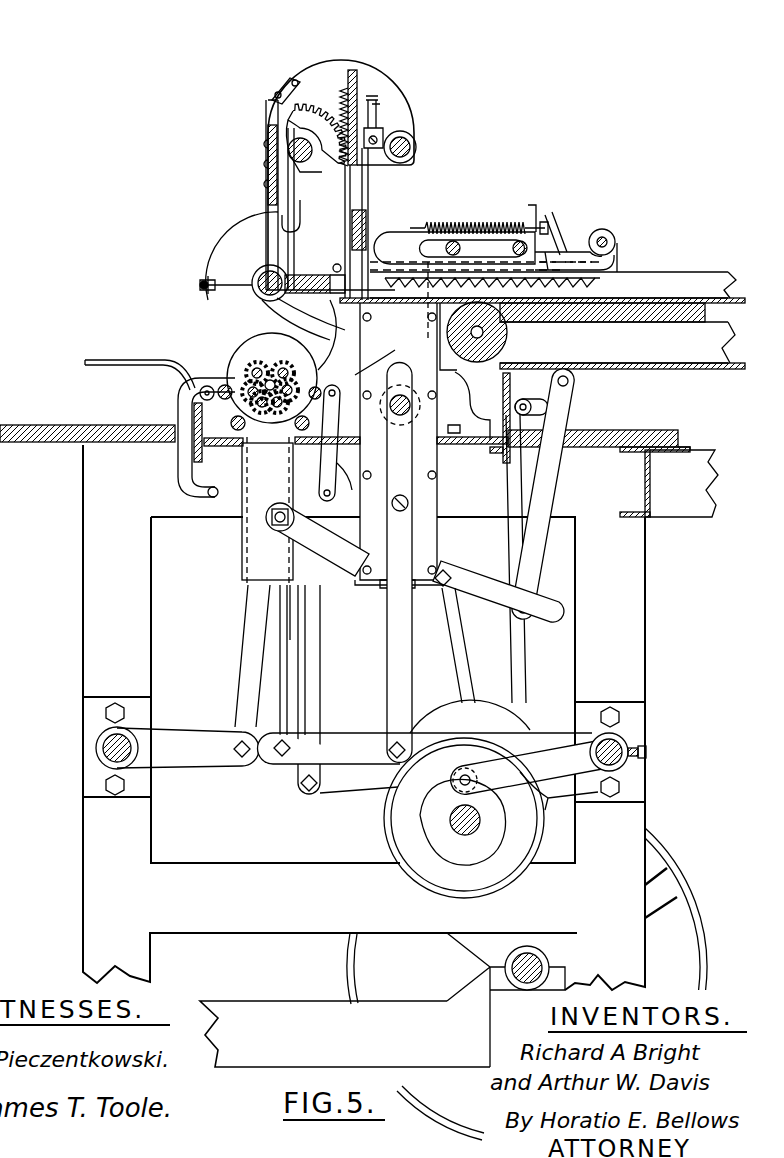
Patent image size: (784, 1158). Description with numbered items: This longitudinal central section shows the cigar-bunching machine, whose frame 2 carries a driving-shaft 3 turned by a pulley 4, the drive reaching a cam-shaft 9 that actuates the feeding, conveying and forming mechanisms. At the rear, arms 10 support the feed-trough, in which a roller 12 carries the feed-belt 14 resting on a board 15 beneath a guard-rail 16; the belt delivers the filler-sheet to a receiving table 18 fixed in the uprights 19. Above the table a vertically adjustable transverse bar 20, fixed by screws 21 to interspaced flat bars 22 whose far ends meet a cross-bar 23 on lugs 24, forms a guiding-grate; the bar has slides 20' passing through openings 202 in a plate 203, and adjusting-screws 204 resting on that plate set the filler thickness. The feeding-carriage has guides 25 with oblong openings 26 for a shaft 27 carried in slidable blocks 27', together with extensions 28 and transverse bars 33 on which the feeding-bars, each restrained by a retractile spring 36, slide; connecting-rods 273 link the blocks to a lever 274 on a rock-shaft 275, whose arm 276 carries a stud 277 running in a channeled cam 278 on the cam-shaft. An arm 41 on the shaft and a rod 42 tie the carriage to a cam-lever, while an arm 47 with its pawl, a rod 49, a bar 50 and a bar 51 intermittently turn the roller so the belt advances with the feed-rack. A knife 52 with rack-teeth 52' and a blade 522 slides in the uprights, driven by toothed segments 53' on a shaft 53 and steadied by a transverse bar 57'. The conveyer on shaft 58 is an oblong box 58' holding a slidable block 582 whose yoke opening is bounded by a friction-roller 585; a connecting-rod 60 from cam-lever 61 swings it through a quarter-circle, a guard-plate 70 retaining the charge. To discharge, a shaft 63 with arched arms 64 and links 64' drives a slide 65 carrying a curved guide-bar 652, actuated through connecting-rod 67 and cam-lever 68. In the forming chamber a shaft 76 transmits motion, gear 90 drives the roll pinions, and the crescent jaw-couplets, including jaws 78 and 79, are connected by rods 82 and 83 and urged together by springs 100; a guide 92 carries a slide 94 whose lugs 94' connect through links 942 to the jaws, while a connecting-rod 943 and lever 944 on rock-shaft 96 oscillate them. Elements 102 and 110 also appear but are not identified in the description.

The frame 2 is at (95, 562).
The driving-shaft 3 is at (542, 962).
The pulley 4 is at (352, 968).
The cam-shaft 9 is at (450, 825).
The arms 10 is at (682, 506).
The roller 12 is at (492, 330).
The feed-belt 14 is at (672, 368).
The board 15 is at (675, 313).
The guard-rail 16 is at (697, 290).
The receiving plate or table 18 is at (395, 300).
The uprights 19 is at (282, 243).
The transverse bar 20 is at (472, 231).
The vertical slides or strips 20' is at (412, 224).
The openings 202 is at (385, 108).
The plate 203 is at (385, 132).
The adjusting-screws 204 is at (380, 98).
The screws 21 is at (455, 247).
The flat bars 22 is at (563, 255).
The cross-bar 23 is at (615, 240).
The lugs 24 is at (612, 262).
The guides 25 is at (422, 540).
The oblong openings 26 is at (404, 477).
The shaft 27 is at (401, 563).
The vertically-slidable blocks 27' is at (409, 381).
The connecting-rod 273 is at (396, 660).
The lever 274 is at (512, 745).
The rock-shaft 275 is at (625, 762).
The arm 276 is at (548, 797).
The stud 277 is at (420, 767).
The channeled cam 278 is at (445, 848).
The extensions or guides 28 is at (458, 210).
The transverse bars 33 is at (500, 215).
The retractile spring 36 is at (492, 222).
The arm 41 is at (490, 408).
The rod 42 is at (520, 655).
The arm 47 is at (572, 383).
The rod 49 is at (548, 490).
The bar 50 is at (455, 582).
The bar 51 is at (457, 645).
The knife 52 is at (378, 89).
The rack-teeth 52' is at (327, 93).
The blade 522 is at (352, 213).
The shaft 53 is at (252, 167).
The toothed segments 53' is at (268, 138).
The transverse bar 57' is at (324, 253).
The shaft 58 is at (256, 272).
The oblong box 58' is at (277, 319).
The slidable block 582 is at (300, 302).
The bar or friction-roller 585 is at (200, 285).
The connecting-rod 60 is at (282, 697).
The cam-lever 61 is at (358, 742).
The shaft 63 is at (417, 147).
The arched arms 64 is at (333, 147).
The links 64' is at (249, 76).
The slide 65 is at (265, 192).
The curved guide-bar 652 is at (238, 237).
The connecting-rod 67 is at (313, 620).
The cam-lever 68 is at (333, 782).
The curved guard-plate 70 is at (322, 335).
The shaft 76 is at (267, 511).
The jaw 78 is at (228, 388).
The jaw 79 is at (320, 378).
The rod 82 is at (248, 385).
The rod 83 is at (362, 378).
The gear 90 is at (270, 378).
The guide 92 is at (262, 572).
The slide 94 is at (317, 536).
The lateral lugs 94' is at (175, 472).
The links 942 is at (178, 468).
The connecting-rod 943 is at (250, 645).
The lever 944 is at (205, 745).
The rock-shaft 96 is at (110, 748).
The springs 100 is at (190, 418).
The guide strip 102 is at (215, 436).
The guide plate 110 is at (105, 358).